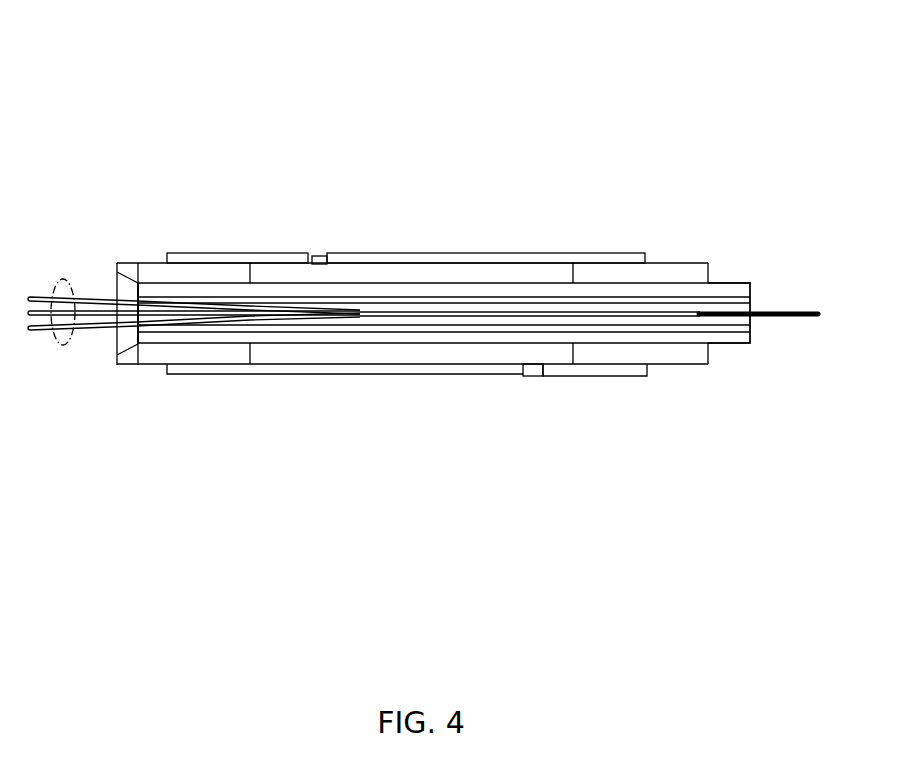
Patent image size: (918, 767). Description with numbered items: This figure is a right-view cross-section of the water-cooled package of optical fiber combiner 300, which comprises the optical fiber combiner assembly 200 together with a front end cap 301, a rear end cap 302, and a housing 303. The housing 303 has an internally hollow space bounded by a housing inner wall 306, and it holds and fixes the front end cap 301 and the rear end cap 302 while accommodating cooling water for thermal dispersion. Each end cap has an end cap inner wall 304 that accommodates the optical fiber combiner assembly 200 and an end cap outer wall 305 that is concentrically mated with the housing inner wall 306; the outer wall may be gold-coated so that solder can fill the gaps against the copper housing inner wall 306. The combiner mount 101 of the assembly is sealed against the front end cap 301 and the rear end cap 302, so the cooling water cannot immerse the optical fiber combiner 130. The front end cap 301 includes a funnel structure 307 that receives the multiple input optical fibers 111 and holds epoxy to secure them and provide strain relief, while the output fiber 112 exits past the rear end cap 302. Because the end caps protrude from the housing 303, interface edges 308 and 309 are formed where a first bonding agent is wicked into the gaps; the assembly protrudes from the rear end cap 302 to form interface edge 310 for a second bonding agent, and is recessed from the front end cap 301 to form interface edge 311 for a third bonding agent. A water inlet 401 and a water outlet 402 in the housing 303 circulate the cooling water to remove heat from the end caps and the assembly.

The water-cooled package of optical fiber combiner 300 is at (408, 222).
The front end cap 301 is at (203, 282).
The rear end cap 302 is at (693, 273).
The housing 303 is at (509, 256).
The end cap inner wall 304 is at (219, 283).
The end cap outer wall 305 is at (236, 283).
The housing inner wall 306 is at (467, 262).
The funnel structure 307 is at (117, 262).
The interface edge 308 is at (166, 254).
The interface edge 309 is at (646, 255).
The interface edge 310 is at (709, 283).
The interface edge 311 is at (138, 344).
The water inlet 401 is at (323, 255).
The water outlet 402 is at (532, 377).
The combiner mount 101 is at (395, 337).
The optical fiber combiner 130 is at (445, 317).
The optical fiber combiner assembly 200 is at (317, 338).
The multiple input optical fibers 111 is at (59, 346).
The output fiber 112 is at (795, 318).